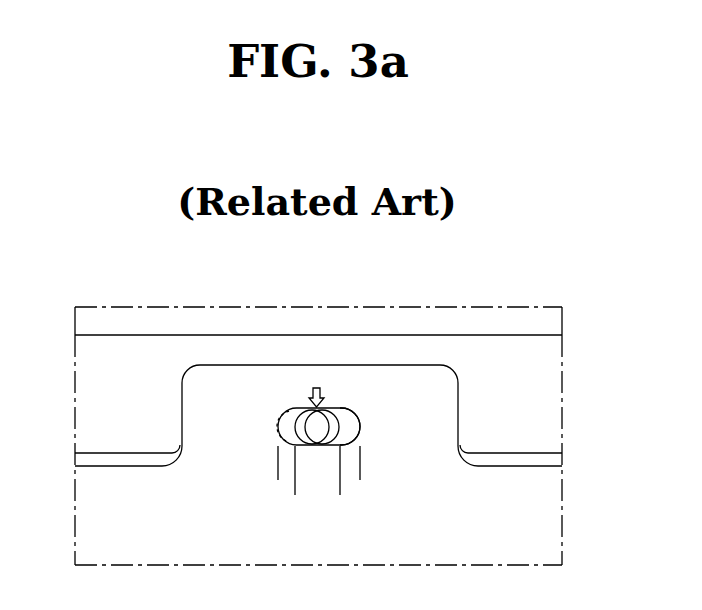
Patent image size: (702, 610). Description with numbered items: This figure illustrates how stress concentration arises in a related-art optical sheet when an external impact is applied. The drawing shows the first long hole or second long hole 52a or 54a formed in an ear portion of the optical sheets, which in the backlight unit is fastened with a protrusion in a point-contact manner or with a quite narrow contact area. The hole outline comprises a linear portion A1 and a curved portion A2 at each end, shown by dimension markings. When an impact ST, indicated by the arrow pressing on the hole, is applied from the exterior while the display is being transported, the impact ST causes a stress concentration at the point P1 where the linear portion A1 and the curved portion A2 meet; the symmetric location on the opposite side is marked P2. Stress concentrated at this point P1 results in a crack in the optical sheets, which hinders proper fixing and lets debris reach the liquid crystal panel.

The stress concentration point P1 is at (287, 406).
The second pad end position P2 is at (351, 406).
The impact ST is at (318, 385).
The first long hole 52a is at (260, 440).
The second long hole 54a is at (288, 424).
The linear portion A1 is at (339, 485).
The curved portion A2 is at (314, 468).